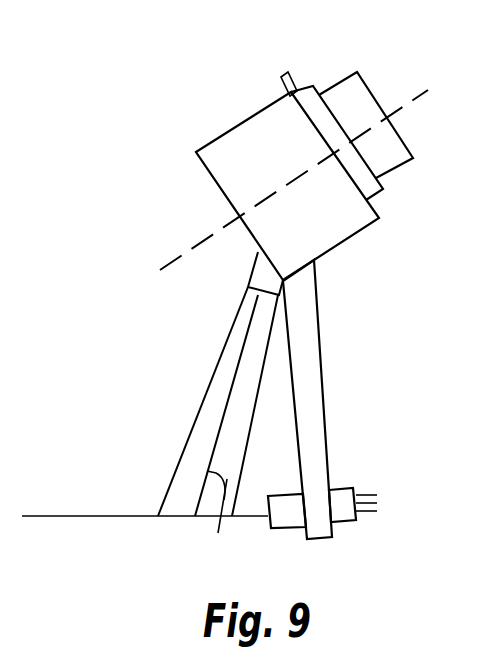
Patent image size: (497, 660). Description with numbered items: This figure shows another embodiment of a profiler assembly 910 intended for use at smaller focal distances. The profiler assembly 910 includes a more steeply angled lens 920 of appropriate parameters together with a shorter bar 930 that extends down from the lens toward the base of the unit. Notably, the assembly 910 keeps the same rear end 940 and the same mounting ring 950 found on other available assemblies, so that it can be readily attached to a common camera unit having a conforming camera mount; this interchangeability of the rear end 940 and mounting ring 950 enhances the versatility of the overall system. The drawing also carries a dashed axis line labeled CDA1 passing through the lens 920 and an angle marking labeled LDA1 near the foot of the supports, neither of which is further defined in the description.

The profiler assembly 910 is at (345, 284).
The lens 920 is at (247, 288).
The bar 930 is at (325, 412).
The rear end 940 is at (358, 102).
The mounting ring 950 is at (308, 93).
The camera detection axis CDA1 is at (167, 262).
The leg angle LDA1 is at (196, 519).